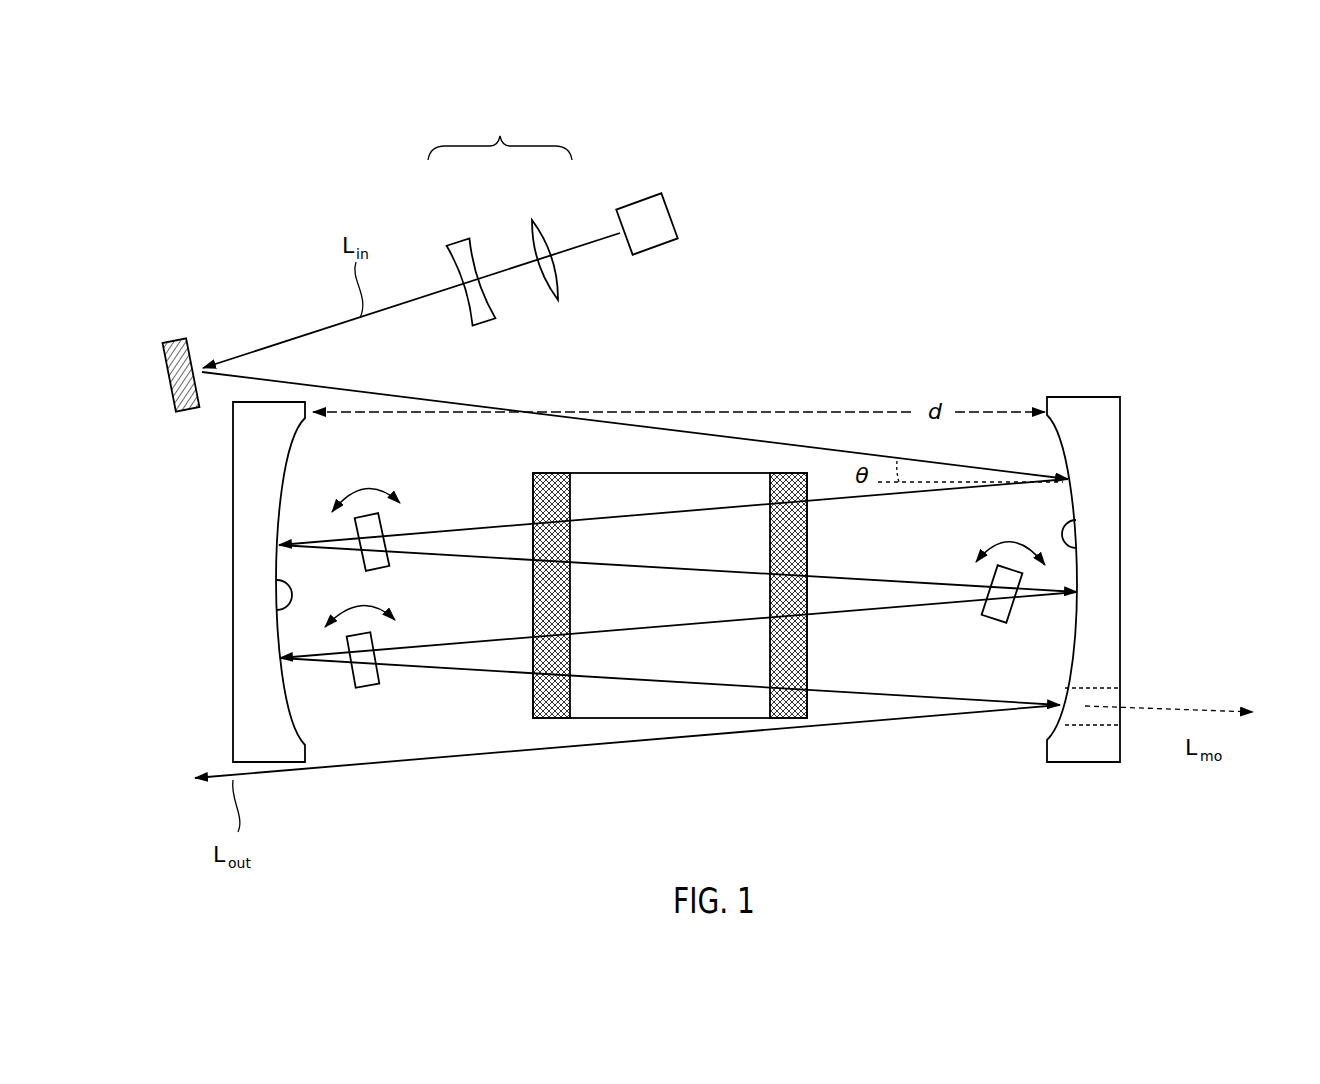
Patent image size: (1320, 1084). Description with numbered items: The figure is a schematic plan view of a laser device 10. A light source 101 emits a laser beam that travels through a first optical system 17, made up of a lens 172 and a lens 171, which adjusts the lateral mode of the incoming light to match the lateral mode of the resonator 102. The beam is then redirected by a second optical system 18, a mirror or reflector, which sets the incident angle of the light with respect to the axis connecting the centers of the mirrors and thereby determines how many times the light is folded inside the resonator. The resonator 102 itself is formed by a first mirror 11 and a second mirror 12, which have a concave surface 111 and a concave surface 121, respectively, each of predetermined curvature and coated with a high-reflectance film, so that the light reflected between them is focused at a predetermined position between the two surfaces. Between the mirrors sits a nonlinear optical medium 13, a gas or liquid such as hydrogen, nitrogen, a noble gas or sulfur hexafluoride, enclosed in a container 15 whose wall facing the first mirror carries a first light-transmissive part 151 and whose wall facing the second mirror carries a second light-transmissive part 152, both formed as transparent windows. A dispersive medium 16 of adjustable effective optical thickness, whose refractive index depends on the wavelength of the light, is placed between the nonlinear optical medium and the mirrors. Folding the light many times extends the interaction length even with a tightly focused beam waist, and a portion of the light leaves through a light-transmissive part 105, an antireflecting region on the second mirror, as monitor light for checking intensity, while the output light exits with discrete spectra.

The laser device 10 is at (962, 108).
The first mirror 11 is at (248, 470).
The concave surface 111 is at (275, 582).
The second mirror 12 is at (1105, 468).
The concave surface 121 is at (1077, 528).
The nonlinear optical medium 13 is at (668, 597).
The container 15 is at (670, 645).
The first light-transmissive part 151 is at (549, 720).
The second light-transmissive part 152 is at (783, 720).
The dispersive medium 16 is at (386, 526).
The first optical system 17 is at (500, 136).
The lens 171 is at (543, 221).
The lens 172 is at (464, 240).
The second optical system 18 is at (187, 340).
The light source 101 is at (647, 198).
The resonator 102 is at (793, 396).
The light-transmissive part 105 is at (1093, 727).